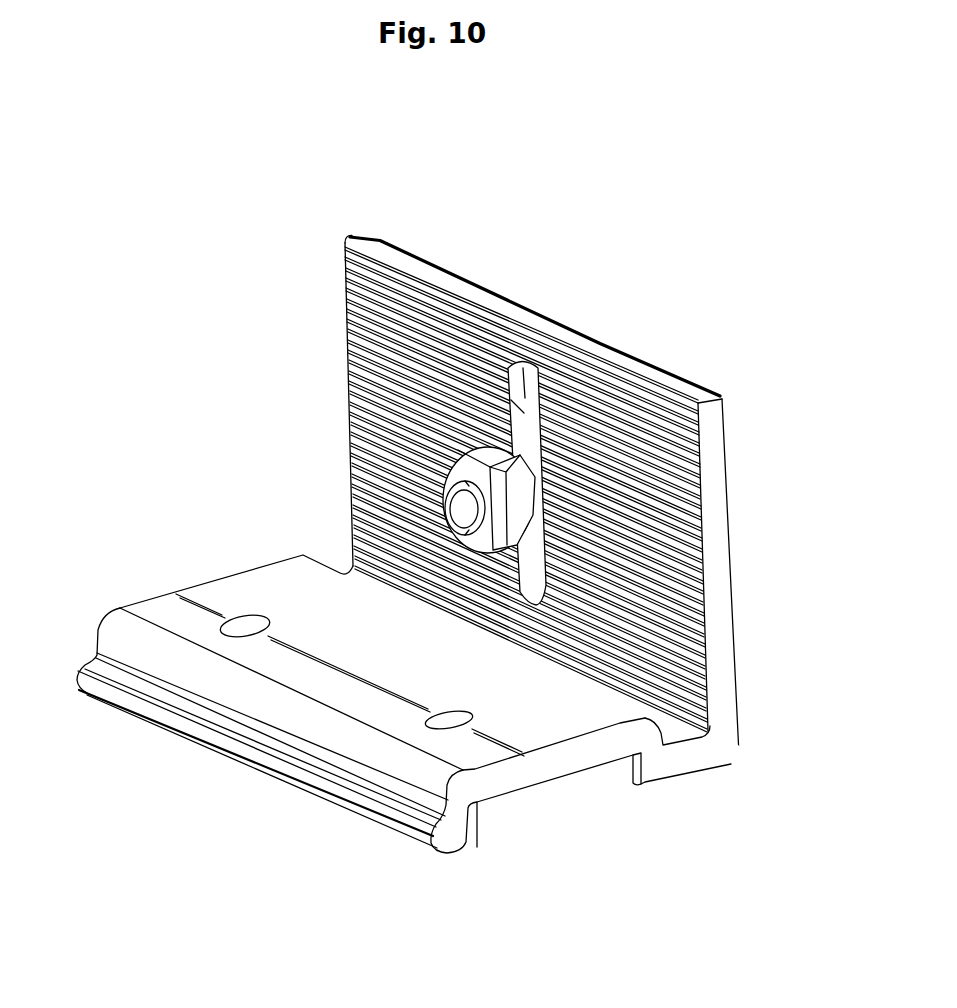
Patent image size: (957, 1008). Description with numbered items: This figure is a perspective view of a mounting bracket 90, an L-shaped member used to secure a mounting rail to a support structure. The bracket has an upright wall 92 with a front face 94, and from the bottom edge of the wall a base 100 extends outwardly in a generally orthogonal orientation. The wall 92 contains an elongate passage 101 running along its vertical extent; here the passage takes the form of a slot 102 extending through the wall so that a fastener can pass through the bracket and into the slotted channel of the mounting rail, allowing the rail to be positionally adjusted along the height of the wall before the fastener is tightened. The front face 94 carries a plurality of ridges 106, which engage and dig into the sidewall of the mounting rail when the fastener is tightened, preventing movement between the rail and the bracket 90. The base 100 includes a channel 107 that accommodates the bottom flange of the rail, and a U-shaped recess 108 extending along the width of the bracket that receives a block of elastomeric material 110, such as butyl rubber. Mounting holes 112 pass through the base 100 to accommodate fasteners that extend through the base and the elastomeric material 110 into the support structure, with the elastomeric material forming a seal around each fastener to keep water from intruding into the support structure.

The mounting bracket 90 is at (478, 565).
The wall 92 is at (582, 467).
The front face 94 is at (648, 420).
The base 100 is at (430, 670).
The elongate passage 101 is at (503, 390).
The slot 102 is at (530, 363).
The ridges 106 is at (362, 323).
The channel 107 is at (687, 740).
The U-shaped recess 108 is at (634, 784).
The block of elastomeric material 110 is at (490, 828).
The mounting holes 112 is at (243, 614).